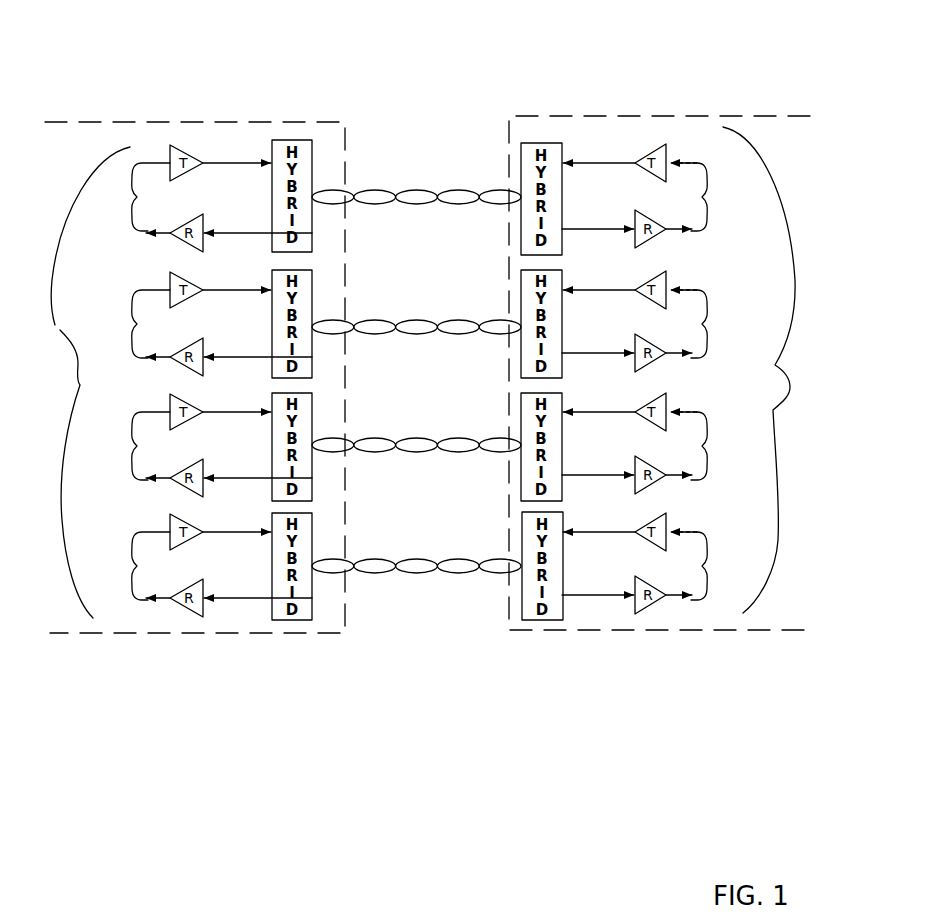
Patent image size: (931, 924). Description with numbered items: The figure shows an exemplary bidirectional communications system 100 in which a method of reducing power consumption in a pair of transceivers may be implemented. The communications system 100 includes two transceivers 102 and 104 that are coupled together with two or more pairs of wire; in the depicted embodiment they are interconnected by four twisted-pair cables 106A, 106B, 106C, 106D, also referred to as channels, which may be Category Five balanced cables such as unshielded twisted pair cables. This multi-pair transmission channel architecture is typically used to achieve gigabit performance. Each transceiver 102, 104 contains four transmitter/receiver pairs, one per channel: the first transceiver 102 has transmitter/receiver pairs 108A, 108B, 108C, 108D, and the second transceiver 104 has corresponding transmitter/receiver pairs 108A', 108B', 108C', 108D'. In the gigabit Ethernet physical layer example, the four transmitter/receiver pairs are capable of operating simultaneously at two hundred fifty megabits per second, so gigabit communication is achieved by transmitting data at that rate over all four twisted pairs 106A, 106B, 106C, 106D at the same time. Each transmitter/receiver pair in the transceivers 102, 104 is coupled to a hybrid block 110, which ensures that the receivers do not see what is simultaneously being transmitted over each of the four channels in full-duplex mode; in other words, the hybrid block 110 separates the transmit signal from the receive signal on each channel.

The communications system 100 is at (840, 48).
The transceiver 102 is at (280, 637).
The transceiver 104 is at (572, 642).
The twisted-pair cable 106A is at (382, 205).
The twisted-pair cable 106B is at (378, 335).
The twisted-pair cable 106C is at (380, 452).
The twisted-pair cable 106D is at (410, 572).
The transmitter/receiver pair 108A is at (197, 199).
The transmitter/receiver pair 108B is at (200, 324).
The transmitter/receiver pair 108C is at (195, 445).
The transmitter/receiver pair 108D is at (200, 565).
The transmitter/receiver pair 108A' is at (667, 196).
The transmitter/receiver pair 108B' is at (669, 321).
The transmitter/receiver pair 108C' is at (662, 443).
The transmitter/receiver pair 108D' is at (661, 563).
The hybrid block 110 is at (303, 140).